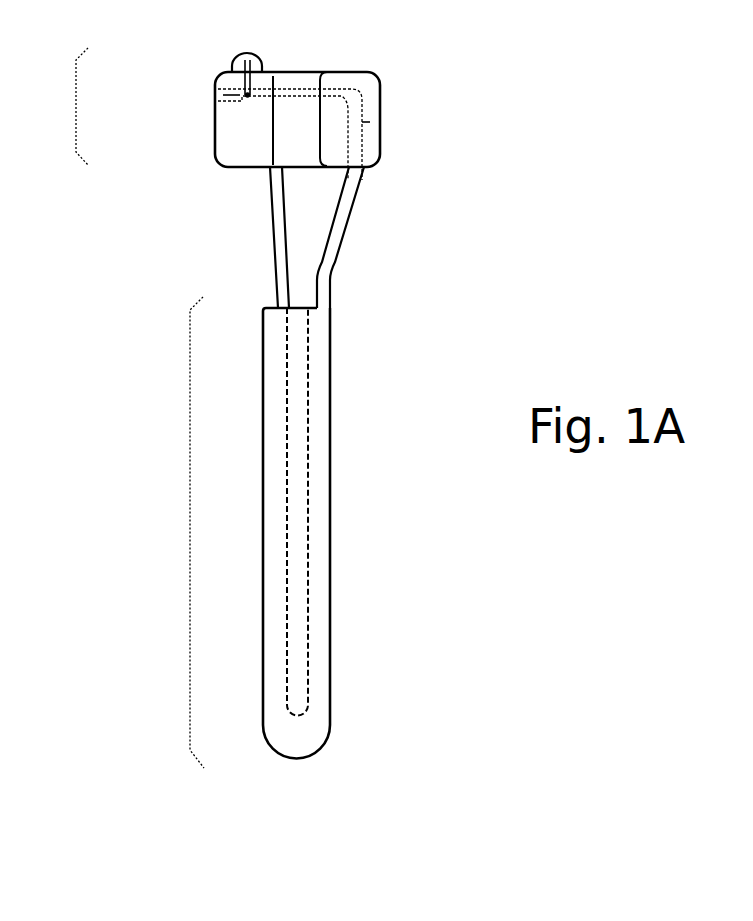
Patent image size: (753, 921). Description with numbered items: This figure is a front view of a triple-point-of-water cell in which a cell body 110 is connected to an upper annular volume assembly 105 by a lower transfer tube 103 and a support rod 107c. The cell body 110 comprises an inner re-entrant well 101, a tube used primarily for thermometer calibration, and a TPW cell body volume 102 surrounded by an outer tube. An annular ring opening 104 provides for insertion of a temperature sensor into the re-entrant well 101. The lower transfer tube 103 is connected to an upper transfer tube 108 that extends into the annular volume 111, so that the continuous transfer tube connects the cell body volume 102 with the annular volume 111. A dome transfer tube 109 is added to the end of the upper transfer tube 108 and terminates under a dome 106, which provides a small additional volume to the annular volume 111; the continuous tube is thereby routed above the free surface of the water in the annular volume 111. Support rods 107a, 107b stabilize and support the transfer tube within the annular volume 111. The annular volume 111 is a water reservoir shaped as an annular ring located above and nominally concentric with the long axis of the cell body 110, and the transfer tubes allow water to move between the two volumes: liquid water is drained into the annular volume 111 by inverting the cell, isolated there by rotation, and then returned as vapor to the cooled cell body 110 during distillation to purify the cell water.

The re-entrant well 101 is at (297, 583).
The TPW cell body volume 102 is at (318, 452).
The lower transfer tube 103 is at (350, 225).
The annular ring opening 104 is at (292, 68).
The upper annular volume assembly 105 is at (58, 106).
The dome 106 is at (237, 60).
The support rod 107a is at (367, 122).
The support rod 107b is at (223, 95).
The support rod 107c is at (280, 250).
The upper transfer tube 108 is at (337, 93).
The dome transfer tube 109 is at (232, 62).
The cell body 110 is at (168, 532).
The annular volume 111 is at (237, 140).